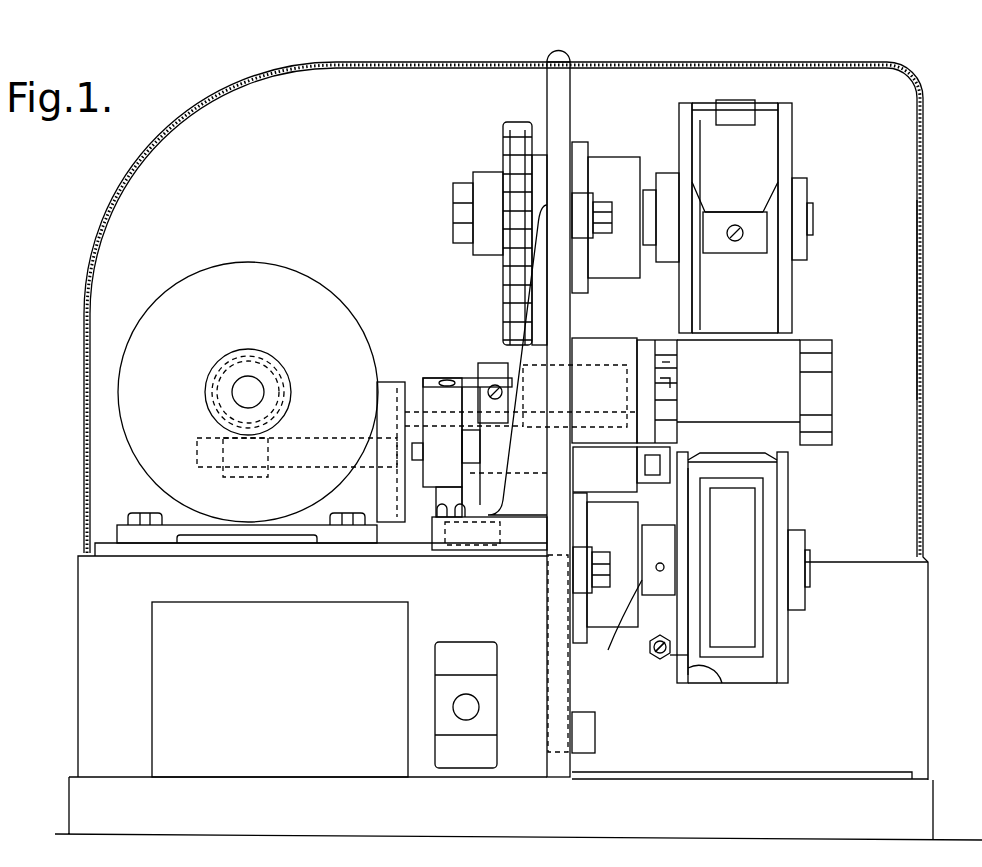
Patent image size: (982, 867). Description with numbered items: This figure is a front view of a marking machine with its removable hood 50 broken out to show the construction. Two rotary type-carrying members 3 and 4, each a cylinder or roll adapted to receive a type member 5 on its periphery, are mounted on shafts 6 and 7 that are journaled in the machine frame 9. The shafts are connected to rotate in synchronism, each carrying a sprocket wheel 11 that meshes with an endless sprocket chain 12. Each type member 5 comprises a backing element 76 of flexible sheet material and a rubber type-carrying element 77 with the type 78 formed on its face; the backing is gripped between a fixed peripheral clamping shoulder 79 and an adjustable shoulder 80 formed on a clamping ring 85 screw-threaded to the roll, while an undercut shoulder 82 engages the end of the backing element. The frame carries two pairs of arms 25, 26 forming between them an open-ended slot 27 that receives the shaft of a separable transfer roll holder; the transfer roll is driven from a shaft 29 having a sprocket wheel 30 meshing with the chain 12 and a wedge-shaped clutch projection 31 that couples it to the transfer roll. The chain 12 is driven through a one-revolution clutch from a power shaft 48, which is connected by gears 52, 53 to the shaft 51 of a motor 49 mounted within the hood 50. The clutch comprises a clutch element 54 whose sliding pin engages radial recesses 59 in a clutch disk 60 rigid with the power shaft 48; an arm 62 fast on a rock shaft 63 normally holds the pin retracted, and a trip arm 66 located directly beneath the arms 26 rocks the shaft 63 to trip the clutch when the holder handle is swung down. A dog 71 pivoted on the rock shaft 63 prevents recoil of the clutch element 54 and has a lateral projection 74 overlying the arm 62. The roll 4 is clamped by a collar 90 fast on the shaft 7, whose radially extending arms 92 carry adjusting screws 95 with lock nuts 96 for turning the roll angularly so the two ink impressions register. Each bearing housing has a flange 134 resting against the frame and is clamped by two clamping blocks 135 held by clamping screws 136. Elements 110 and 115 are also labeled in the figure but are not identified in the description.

The rotary type-carrying member 3 is at (681, 134).
The rotary type-carrying member 4 is at (674, 663).
The type member 5 is at (775, 130).
The shaft 6 is at (650, 198).
The shaft 7 is at (812, 584).
The machine frame 9 is at (84, 578).
The sprocket wheel 11 is at (488, 177).
The endless sprocket chain 12 is at (503, 272).
The arm 25 is at (828, 360).
The arm 26 is at (655, 352).
The open-ended slot 27 is at (662, 370).
The shaft 29 is at (592, 365).
The sprocket wheel 30 is at (512, 365).
The wedge-shaped clutch projection 31 is at (662, 383).
The power shaft 48 is at (309, 447).
The motor 49 is at (236, 268).
The removable hood 50 is at (114, 190).
The motor shaft 51 is at (252, 388).
The gear 52 is at (284, 397).
The gear 53 is at (256, 478).
The clutch element 54 is at (428, 500).
The radial recess 59 is at (410, 462).
The clutch disk 60 is at (413, 385).
The arm 62 is at (457, 446).
The rock shaft 63 is at (680, 458).
The trip arm 66 is at (657, 462).
The dog 71 is at (448, 378).
The lateral projection 74 is at (462, 380).
The backing element 76 is at (748, 200).
The type-carrying element 77 is at (752, 121).
The type 78 is at (730, 100).
The peripheral clamping shoulder 79 is at (690, 290).
The peripheral clamping shoulder 80 is at (782, 296).
The undercut shoulder 82 is at (768, 240).
The clamping ring 85 is at (790, 136).
The collar 90 is at (642, 535).
The radially extending arm 92 is at (640, 605).
The adjusting screw 95 is at (650, 660).
The lock nut 96 is at (660, 640).
The shaft 110 is at (790, 340).
The housing side wall 115 is at (924, 238).
The flange 134 is at (578, 140).
The clamping block 135 is at (590, 195).
The clamping screw 136 is at (603, 205).